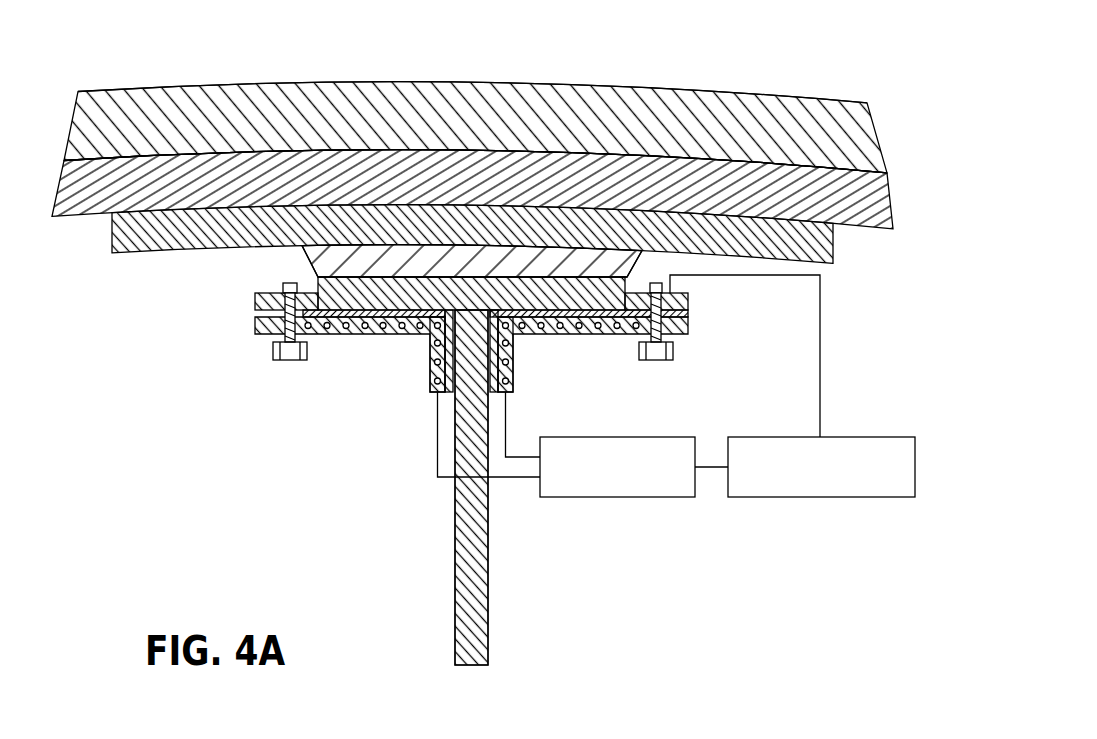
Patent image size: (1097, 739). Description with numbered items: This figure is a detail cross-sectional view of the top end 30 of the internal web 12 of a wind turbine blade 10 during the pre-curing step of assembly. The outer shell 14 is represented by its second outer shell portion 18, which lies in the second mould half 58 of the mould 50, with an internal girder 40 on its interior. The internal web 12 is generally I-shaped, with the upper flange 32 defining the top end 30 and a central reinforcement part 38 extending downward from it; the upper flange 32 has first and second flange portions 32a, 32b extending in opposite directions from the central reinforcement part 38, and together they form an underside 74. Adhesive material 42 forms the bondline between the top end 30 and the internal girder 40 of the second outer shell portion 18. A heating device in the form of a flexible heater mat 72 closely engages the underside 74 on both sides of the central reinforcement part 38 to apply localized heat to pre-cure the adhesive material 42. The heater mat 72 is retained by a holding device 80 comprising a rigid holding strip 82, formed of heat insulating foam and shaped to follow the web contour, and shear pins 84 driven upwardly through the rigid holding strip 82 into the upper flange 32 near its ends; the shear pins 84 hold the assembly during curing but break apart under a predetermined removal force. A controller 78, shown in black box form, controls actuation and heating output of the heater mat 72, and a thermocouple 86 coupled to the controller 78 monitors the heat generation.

The wind turbine blade 10 is at (733, 156).
The internal web 12 is at (454, 581).
The outer shell 14 is at (789, 166).
The second outer shell portion 18 is at (460, 162).
The top end 30 is at (317, 279).
The upper flange 32 is at (375, 282).
The first flange portion 32a is at (255, 300).
The second flange portion 32b is at (690, 300).
The central reinforcement part 38 is at (488, 585).
The internal girder 40 is at (112, 232).
The adhesive material 42 is at (410, 262).
The mould 50 is at (541, 82).
The second mould half 58 is at (616, 95).
The heater mat 72 is at (390, 318).
The underside 74 is at (549, 333).
The controller 78 is at (685, 497).
The holding device 80 is at (254, 328).
The rigid holding strip 82 is at (332, 334).
The shear pins 84 is at (280, 360).
The thermocouple 86 is at (900, 497).